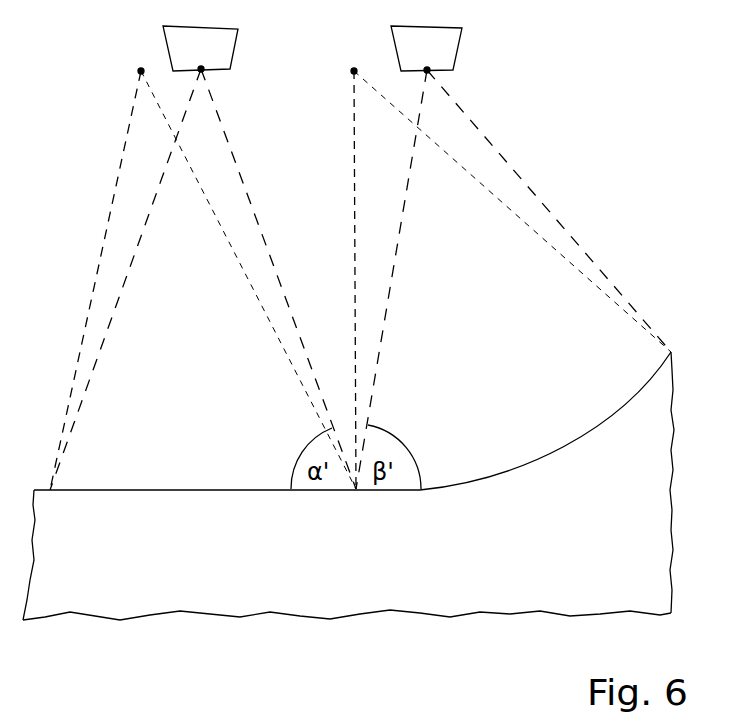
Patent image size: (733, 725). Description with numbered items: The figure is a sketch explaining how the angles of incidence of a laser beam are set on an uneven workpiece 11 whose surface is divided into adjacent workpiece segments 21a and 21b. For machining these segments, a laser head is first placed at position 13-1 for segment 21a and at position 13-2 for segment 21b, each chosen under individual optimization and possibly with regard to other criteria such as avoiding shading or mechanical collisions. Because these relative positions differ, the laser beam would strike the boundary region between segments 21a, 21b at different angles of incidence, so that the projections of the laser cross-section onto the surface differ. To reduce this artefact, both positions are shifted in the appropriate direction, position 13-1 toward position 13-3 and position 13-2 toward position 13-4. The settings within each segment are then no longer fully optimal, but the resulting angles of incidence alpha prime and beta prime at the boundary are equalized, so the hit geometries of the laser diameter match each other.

The workpiece / object 11 is at (555, 563).
The workpiece segment 21a is at (217, 480).
The workpiece segment 21b is at (553, 450).
The position of laser head 13-1 is at (141, 71).
The position of laser head 13-2 is at (354, 71).
The shifted position of laser head 13-3 is at (173, 42).
The shifted position of laser head 13-4 is at (453, 47).